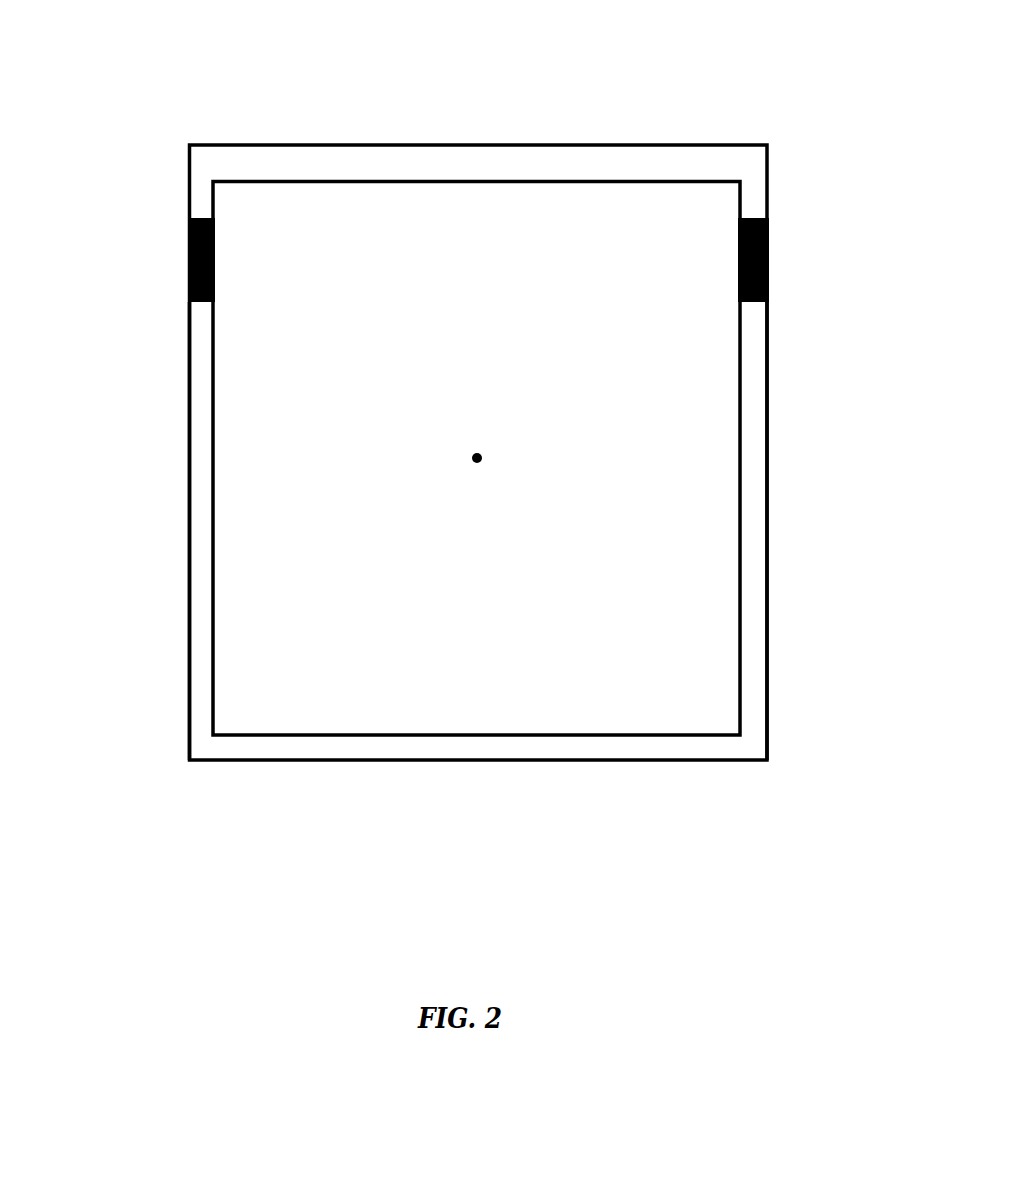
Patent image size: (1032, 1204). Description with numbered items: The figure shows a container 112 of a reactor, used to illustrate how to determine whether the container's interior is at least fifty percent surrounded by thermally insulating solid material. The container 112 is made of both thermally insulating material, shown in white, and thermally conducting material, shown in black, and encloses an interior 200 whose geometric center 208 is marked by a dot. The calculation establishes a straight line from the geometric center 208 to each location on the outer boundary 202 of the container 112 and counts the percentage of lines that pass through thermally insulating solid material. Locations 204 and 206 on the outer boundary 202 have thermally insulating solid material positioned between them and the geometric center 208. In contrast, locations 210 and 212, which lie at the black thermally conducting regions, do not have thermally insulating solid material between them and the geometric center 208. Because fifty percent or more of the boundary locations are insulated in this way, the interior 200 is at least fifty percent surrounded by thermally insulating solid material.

The container 112 is at (84, 117).
The interior 200 is at (492, 622).
The outer boundary 202 is at (495, 145).
The location 204 is at (188, 613).
The location 206 is at (767, 443).
The geometric center 208 is at (478, 452).
The location 210 is at (188, 263).
The location 212 is at (772, 263).